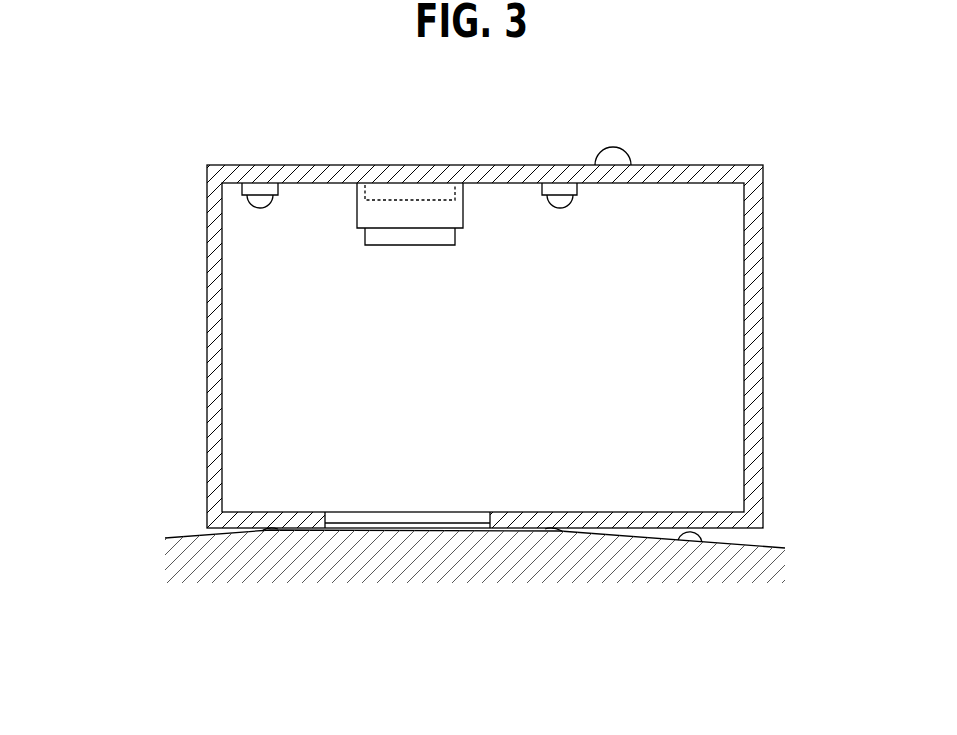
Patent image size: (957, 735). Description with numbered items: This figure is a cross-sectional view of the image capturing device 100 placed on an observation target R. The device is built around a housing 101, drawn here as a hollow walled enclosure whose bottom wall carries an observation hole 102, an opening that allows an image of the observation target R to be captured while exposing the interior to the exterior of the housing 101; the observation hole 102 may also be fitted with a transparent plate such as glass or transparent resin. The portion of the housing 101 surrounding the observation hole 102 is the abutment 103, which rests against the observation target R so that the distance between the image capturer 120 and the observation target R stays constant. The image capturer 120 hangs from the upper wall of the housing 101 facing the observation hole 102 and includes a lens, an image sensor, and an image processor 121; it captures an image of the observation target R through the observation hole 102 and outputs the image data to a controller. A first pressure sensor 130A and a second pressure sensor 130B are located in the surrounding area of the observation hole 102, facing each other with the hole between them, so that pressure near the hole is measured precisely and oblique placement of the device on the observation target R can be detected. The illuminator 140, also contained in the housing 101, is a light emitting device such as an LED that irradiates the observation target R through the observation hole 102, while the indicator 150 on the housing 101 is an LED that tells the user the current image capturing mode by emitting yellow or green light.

The image capturing device 100 is at (435, 148).
The housing 101 is at (313, 165).
The observation hole 102 is at (340, 516).
The abutment 103 is at (497, 530).
The image capturer 120 is at (365, 233).
The image processor 121 is at (377, 201).
The first pressure sensor 130A is at (557, 532).
The second pressure sensor 130B is at (270, 533).
The illuminator 140 is at (245, 198).
The indicator 150 is at (613, 147).
The observation target R is at (692, 541).